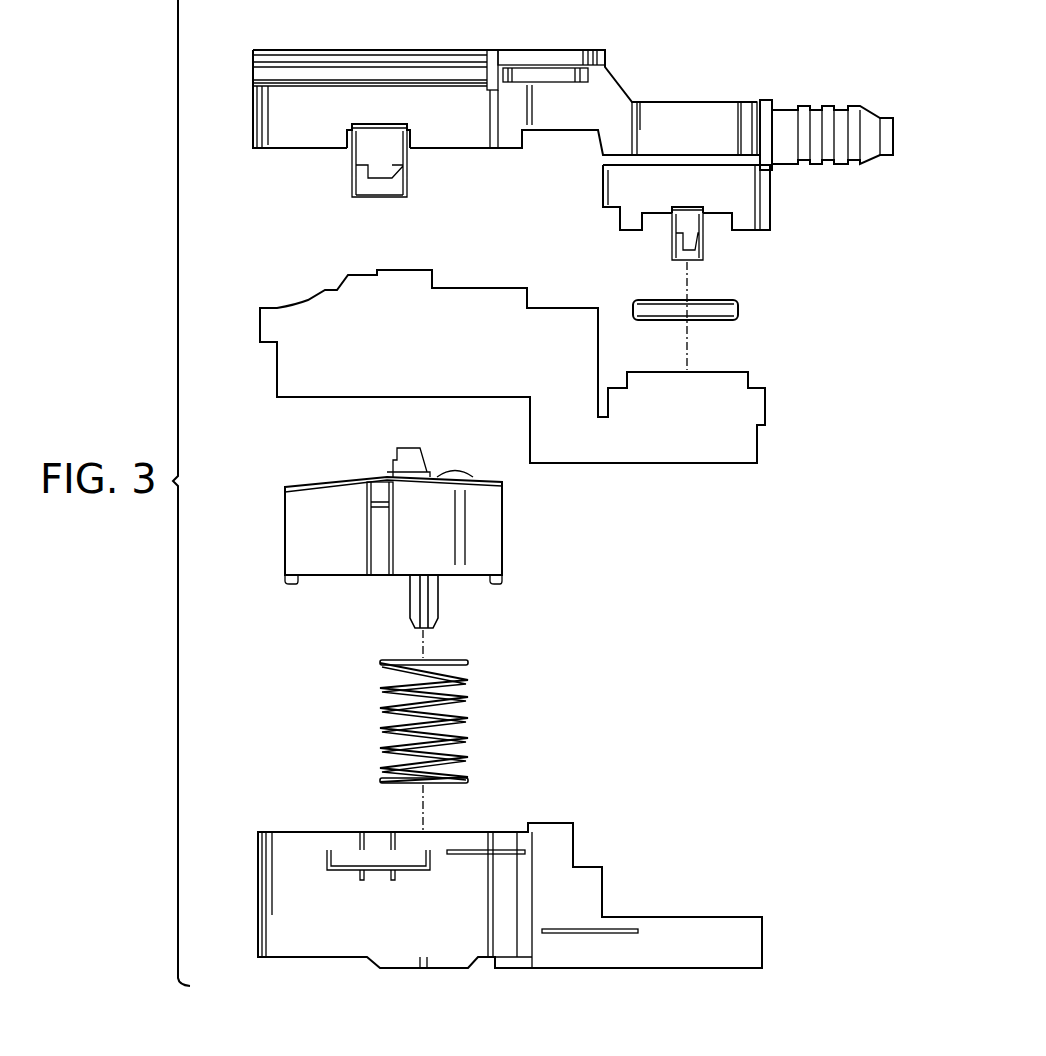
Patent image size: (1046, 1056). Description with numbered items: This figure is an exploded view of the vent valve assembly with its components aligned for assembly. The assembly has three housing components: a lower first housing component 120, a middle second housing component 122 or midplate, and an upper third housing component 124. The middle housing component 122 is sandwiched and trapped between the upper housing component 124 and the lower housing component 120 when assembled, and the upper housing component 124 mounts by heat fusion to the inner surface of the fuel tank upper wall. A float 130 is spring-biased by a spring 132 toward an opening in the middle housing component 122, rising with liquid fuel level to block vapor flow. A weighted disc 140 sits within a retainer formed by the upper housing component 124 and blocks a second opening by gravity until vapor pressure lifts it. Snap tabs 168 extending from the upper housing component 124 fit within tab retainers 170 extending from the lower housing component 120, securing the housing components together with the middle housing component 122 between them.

The first housing component 120 is at (258, 888).
The second housing component 122 is at (274, 370).
The third housing component 124 is at (253, 114).
The float 130 is at (285, 535).
The spring 132 is at (380, 707).
The weighted disc 140 is at (740, 310).
The snap tabs 168 is at (360, 170).
The tab retainers 170 is at (352, 863).